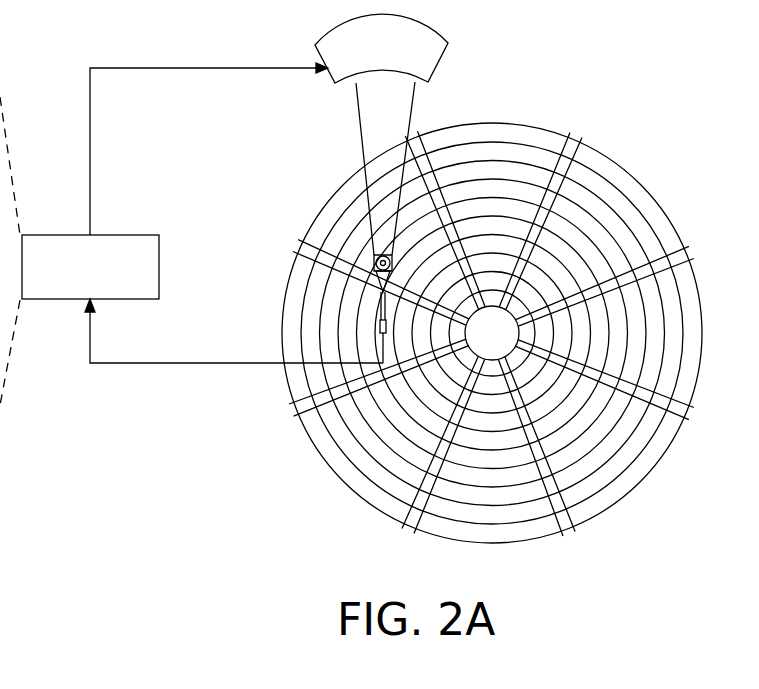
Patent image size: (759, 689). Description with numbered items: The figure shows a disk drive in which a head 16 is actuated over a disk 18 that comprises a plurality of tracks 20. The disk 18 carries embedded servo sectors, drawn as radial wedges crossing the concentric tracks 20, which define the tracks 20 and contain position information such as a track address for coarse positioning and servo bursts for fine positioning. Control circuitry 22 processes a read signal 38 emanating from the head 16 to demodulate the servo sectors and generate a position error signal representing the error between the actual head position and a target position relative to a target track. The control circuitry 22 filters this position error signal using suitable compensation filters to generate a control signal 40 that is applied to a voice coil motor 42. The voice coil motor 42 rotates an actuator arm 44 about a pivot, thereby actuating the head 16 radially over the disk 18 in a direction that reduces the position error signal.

The head 16 is at (377, 336).
The disk 18 is at (643, 179).
The tracks 20 is at (492, 148).
The control circuitry 22 is at (127, 235).
The read signal 38 is at (181, 363).
The control signal 40 is at (90, 140).
The voice coil motor 42 is at (333, 80).
The actuator arm 44 is at (364, 156).